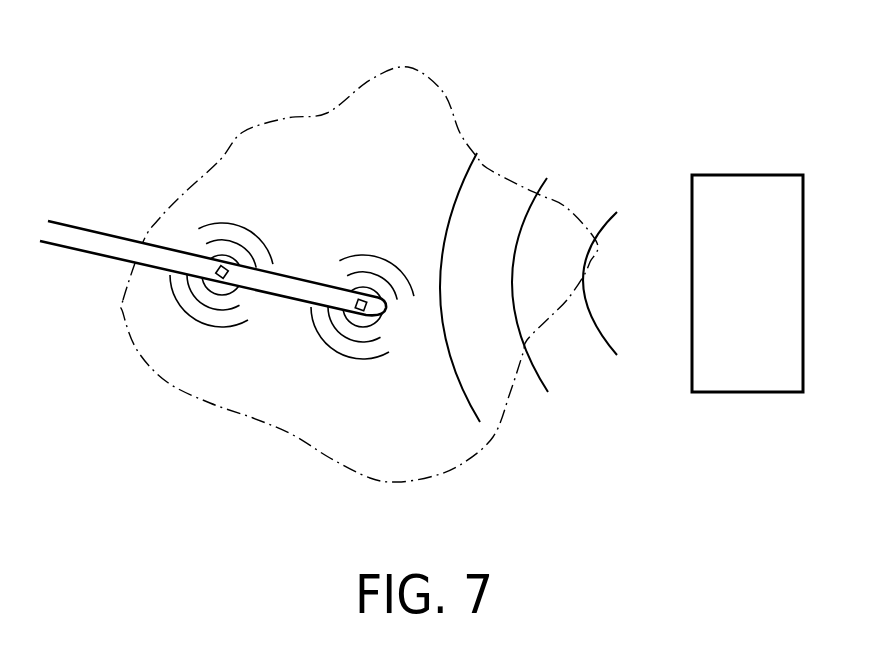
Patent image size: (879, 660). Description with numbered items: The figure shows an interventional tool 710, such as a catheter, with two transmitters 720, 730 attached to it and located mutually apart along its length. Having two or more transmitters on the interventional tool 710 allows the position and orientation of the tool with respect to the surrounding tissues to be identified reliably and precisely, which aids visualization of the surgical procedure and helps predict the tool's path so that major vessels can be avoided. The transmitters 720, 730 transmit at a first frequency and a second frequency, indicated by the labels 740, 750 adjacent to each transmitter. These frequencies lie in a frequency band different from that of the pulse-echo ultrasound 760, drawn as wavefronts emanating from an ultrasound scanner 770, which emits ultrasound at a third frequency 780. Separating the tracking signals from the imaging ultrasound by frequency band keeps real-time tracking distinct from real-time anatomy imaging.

The interventional tool 710 is at (88, 243).
The transmitter 720 is at (247, 290).
The transmitter 730 is at (382, 316).
The first frequency f1 signal 740 is at (238, 184).
The second frequency f2 signal 750 is at (378, 218).
The pulse-echo ultrasound 760 is at (550, 400).
The ultrasound scanner 770 is at (773, 297).
The frequency f3 780 is at (553, 130).